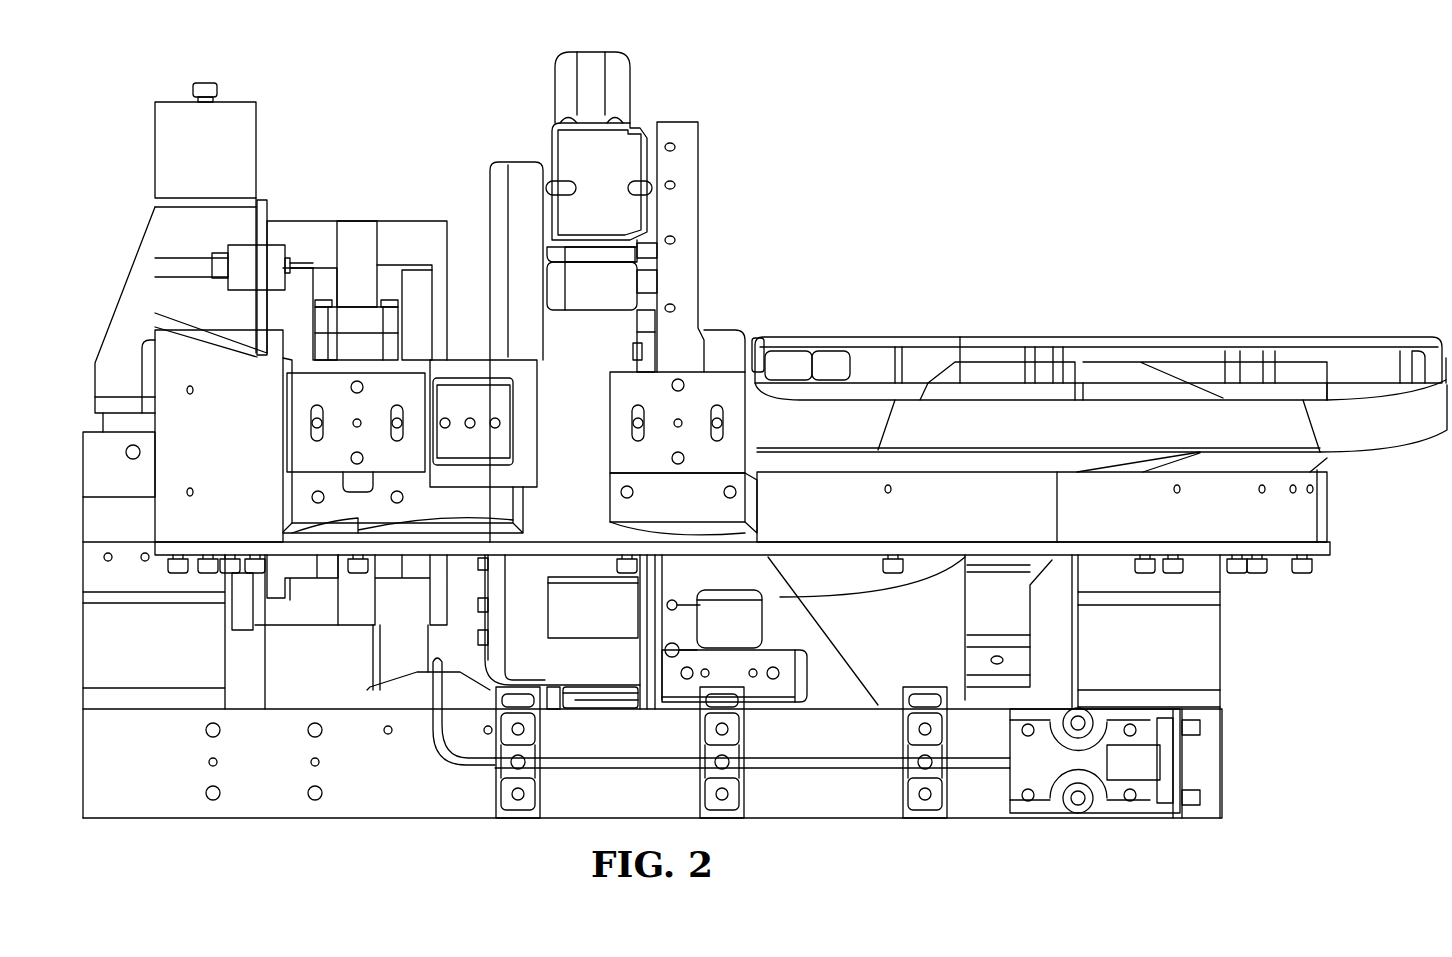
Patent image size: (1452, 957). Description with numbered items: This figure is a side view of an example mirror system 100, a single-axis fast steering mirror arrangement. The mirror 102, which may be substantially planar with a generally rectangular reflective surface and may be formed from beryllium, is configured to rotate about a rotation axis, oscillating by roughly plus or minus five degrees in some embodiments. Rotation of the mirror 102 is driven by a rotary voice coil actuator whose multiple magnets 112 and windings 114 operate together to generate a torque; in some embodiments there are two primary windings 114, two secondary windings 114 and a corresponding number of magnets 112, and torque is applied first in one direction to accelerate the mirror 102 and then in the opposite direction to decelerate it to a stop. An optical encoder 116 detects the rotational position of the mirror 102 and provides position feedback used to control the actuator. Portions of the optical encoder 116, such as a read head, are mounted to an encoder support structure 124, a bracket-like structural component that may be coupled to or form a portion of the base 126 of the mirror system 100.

The mirror system 100 is at (1037, 114).
The mirror 102 is at (1122, 337).
The magnets 112 is at (313, 230).
The windings 114 is at (357, 323).
The optical encoder 116 is at (517, 160).
The encoder support structure 124 is at (703, 187).
The base 126 is at (123, 822).